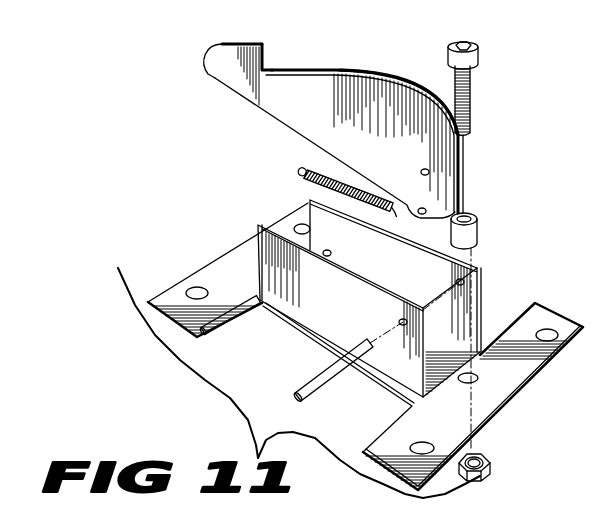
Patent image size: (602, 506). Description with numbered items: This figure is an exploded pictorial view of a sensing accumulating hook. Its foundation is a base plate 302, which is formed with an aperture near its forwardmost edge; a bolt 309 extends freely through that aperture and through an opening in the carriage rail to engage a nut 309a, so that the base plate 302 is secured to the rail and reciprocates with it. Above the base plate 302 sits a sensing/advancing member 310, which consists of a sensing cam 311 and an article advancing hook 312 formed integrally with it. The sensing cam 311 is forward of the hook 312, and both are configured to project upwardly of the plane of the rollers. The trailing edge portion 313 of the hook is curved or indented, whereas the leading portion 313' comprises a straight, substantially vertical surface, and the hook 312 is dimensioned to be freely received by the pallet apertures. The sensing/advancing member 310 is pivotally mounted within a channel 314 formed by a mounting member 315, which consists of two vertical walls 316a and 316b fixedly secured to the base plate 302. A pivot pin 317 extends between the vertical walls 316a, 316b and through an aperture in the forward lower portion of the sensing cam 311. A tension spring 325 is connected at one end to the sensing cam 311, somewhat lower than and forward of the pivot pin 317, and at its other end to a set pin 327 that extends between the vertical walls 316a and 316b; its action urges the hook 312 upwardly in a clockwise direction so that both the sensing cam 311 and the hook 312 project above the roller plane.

The base plate 302 is at (512, 392).
The bolt 309 is at (478, 58).
The nut 309a is at (488, 457).
The sensing/advancing member 310 is at (362, 71).
The sensing cam 311 is at (401, 96).
The article advancing hook 312 is at (210, 72).
The trailing edge portion 313 is at (212, 53).
The leading portion 313' is at (285, 57).
The channel 314 is at (288, 214).
The mounting member 315 is at (474, 307).
The vertical wall 316a is at (293, 325).
The vertical wall 316b is at (473, 272).
The pivot pin 317 is at (313, 388).
The tension spring 325 is at (332, 189).
The set pin 327 is at (225, 329).